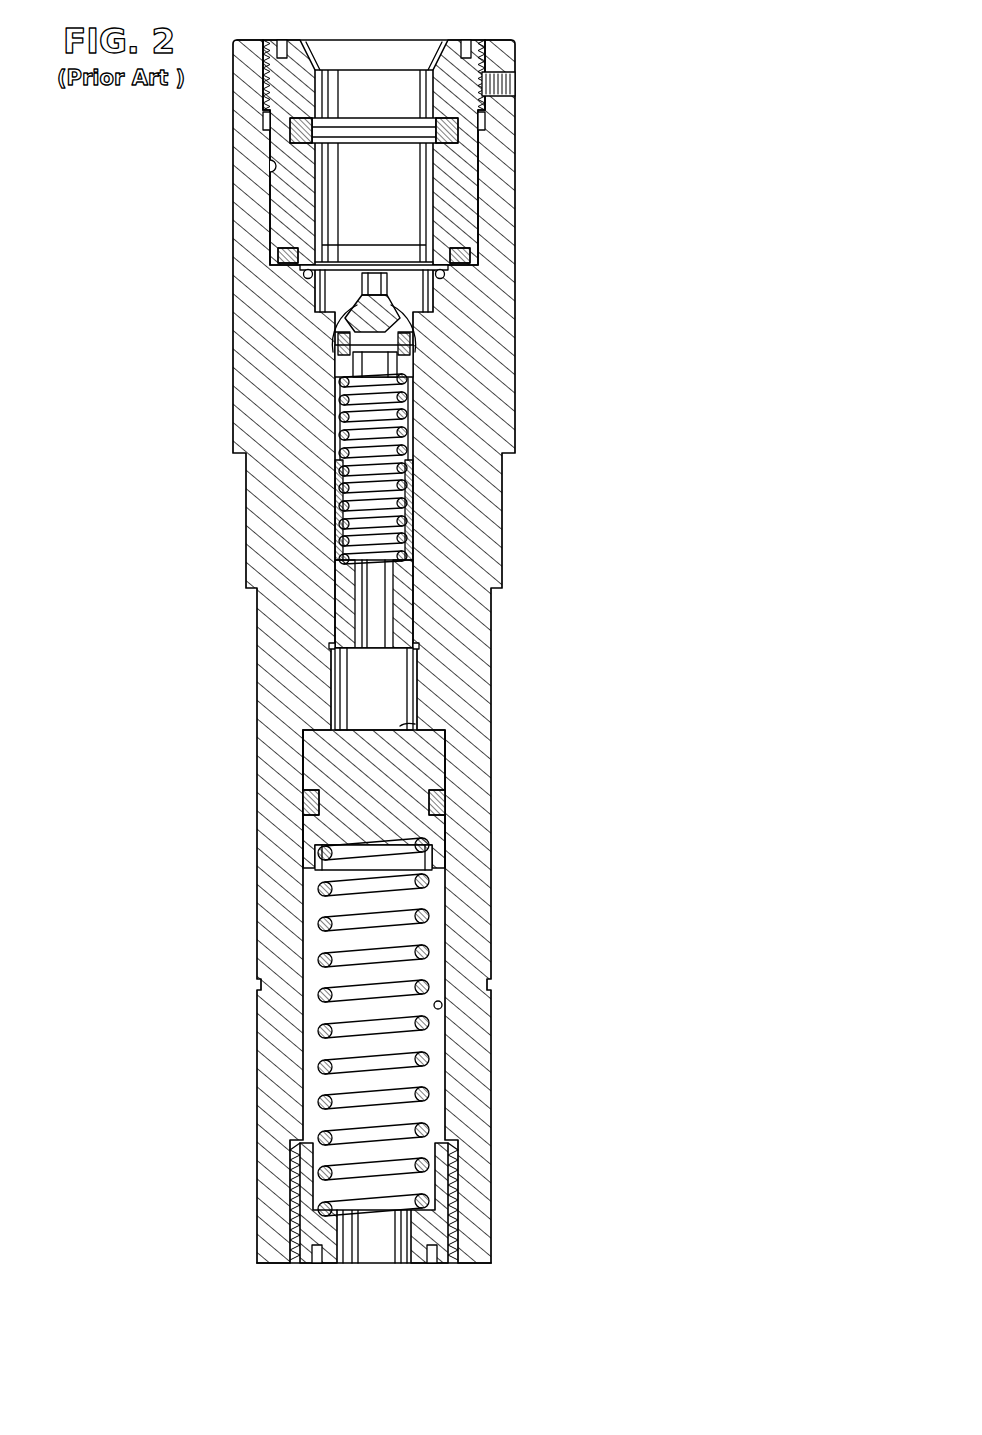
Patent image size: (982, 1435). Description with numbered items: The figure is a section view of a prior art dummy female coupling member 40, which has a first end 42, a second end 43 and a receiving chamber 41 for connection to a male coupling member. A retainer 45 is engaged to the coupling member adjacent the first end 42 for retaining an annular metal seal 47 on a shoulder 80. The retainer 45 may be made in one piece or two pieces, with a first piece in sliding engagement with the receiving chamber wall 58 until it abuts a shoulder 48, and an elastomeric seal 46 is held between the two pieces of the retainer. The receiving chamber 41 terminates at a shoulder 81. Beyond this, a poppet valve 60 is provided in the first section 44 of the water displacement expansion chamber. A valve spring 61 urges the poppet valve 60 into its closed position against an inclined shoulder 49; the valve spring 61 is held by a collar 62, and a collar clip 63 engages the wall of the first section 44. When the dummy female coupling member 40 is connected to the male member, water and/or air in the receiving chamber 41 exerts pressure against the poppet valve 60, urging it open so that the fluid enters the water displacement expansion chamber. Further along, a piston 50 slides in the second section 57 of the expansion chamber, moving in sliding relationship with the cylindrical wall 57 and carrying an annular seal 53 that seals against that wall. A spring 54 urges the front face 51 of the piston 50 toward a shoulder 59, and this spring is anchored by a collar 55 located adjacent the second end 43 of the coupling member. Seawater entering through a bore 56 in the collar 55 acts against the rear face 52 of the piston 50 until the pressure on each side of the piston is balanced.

The dummy female coupling member 40 is at (513, 705).
The receiving chamber 41 is at (411, 207).
The first end 42 is at (498, 40).
The second end 43 is at (465, 1265).
The first section of the water displacement expansion chamber 44 is at (410, 663).
The retainer 45 is at (455, 185).
The elastomeric seal 46 is at (445, 145).
The annular metal seal 47 is at (444, 272).
The shoulder 48 is at (286, 250).
The inclined shoulder 49 is at (343, 348).
The piston 50 is at (435, 830).
The front face 51 is at (410, 726).
The rear face 52 is at (365, 850).
The annular seal 53 is at (303, 804).
The spring 54 is at (320, 1000).
The collar 55 is at (440, 1177).
The bore 56 is at (407, 1245).
The second section of the water displacement expansion chamber 57 is at (442, 1007).
The receiving chamber wall 58 is at (270, 176).
The shoulder 59 is at (303, 743).
The poppet valve 60 is at (400, 313).
The valve spring 61 is at (343, 460).
The collar 62 is at (340, 603).
The collar clip 63 is at (330, 645).
The shoulder 80 is at (305, 267).
The shoulder 81 is at (325, 312).